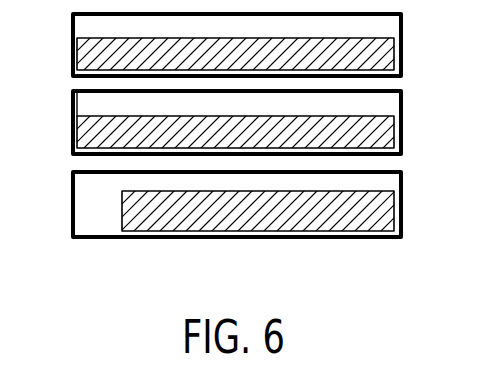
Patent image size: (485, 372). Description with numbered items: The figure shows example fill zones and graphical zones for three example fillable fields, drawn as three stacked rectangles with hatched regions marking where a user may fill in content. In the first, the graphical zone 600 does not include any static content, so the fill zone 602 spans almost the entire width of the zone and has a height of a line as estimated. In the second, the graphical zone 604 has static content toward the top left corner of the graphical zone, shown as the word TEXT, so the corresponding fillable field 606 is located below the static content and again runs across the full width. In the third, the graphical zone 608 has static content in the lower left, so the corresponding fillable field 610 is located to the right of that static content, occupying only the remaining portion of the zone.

The graphical zone 600 is at (403, 38).
The fill zone 602 is at (78, 42).
The graphical zone 604 is at (403, 120).
The fillable field 606 is at (78, 130).
The graphical zone 608 is at (403, 210).
The fillable field 610 is at (148, 223).